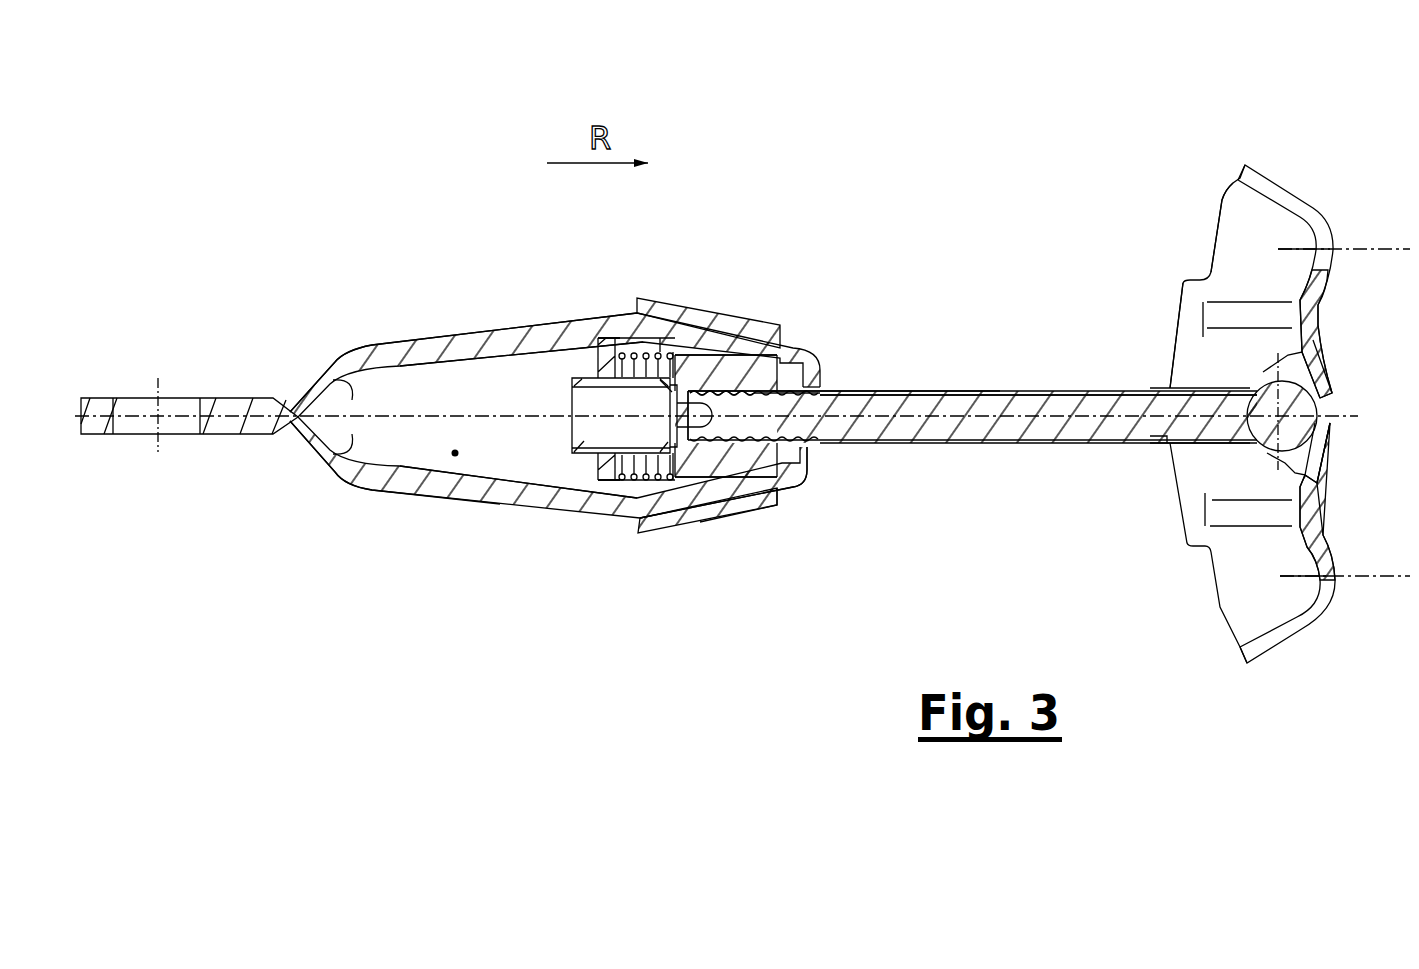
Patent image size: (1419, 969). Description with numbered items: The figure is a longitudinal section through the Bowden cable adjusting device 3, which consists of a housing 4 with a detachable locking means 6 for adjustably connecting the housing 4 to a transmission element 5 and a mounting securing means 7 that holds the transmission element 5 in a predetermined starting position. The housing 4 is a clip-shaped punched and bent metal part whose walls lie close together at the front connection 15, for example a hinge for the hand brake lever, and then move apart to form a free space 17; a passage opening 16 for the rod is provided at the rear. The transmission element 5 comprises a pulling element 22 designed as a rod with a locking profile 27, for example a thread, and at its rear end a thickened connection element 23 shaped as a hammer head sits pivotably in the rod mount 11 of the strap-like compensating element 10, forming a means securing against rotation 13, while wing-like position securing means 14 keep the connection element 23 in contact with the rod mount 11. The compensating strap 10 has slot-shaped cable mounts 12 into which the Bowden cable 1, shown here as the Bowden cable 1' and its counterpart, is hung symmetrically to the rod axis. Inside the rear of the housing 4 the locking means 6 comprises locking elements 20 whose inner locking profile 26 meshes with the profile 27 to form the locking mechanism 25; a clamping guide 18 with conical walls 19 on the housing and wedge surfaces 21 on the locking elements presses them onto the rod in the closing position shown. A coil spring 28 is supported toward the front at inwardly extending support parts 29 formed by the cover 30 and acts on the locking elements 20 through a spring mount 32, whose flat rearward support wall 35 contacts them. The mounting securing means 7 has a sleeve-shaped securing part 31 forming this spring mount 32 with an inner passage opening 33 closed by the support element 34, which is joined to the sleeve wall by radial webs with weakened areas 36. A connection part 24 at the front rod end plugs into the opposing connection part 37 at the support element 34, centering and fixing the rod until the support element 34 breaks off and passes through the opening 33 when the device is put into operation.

The Bowden cable 1 is at (1276, 376).
The Bowden cable 1' is at (1341, 209).
The Bowden cable adjusting device 3 is at (962, 248).
The housing 4 is at (367, 467).
The transmission element 5 is at (980, 332).
The detachable locking means 6 is at (825, 335).
The mounting securing means 7 is at (648, 490).
The compensating element 10 is at (1247, 593).
The rod mount 11 is at (1270, 372).
The cable mount 12 is at (1298, 627).
The means securing against rotation 13 is at (1252, 370).
The position securing means 14 is at (1320, 455).
The connection 15 is at (178, 446).
The passage opening 16 is at (818, 380).
The free space 17 is at (456, 458).
The clamping guide 18 is at (795, 493).
The conical wall 19 is at (752, 395).
The locking element 20 is at (723, 463).
The wedge surface 21 is at (770, 487).
The pulling element 22 is at (1053, 423).
The connection element 23 is at (1267, 428).
The connection part 24 is at (690, 445).
The locking mechanism 25 is at (771, 438).
The locking profile 26 is at (742, 395).
The locking profile 27 is at (963, 440).
The spring 28 is at (643, 475).
The support part 29 is at (622, 352).
The cover 30 is at (660, 335).
The securing part 31 is at (608, 350).
The spring mount 32 is at (608, 350).
The passage opening 33 is at (593, 398).
The support element 34 is at (660, 425).
The support wall 35 is at (688, 365).
The weakened area 36 is at (625, 352).
The opposing connection part 37 is at (690, 445).